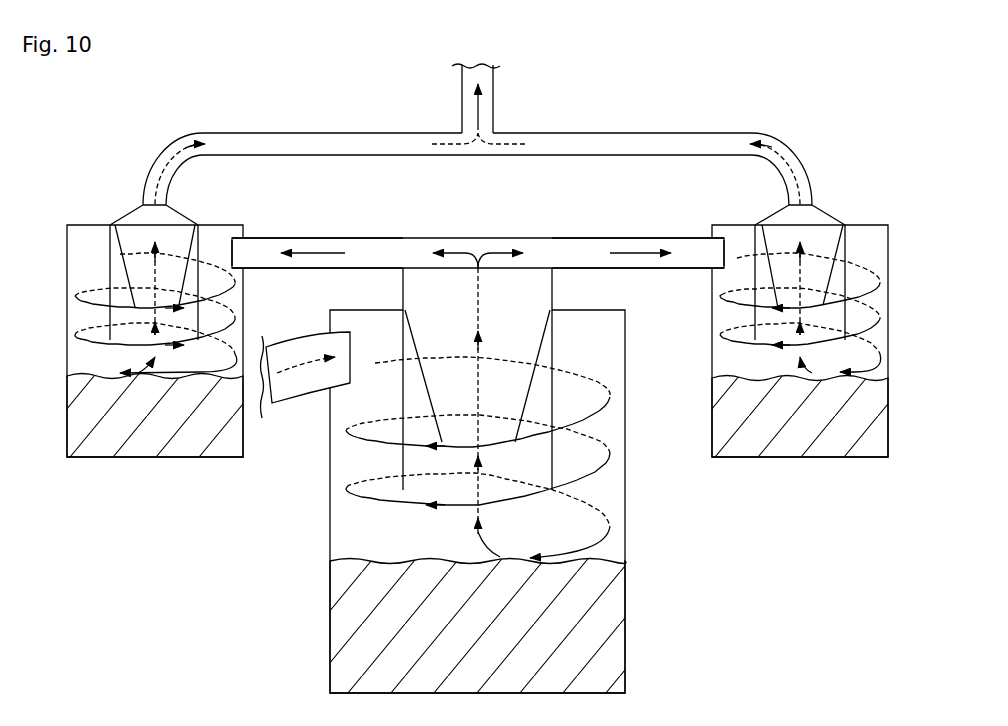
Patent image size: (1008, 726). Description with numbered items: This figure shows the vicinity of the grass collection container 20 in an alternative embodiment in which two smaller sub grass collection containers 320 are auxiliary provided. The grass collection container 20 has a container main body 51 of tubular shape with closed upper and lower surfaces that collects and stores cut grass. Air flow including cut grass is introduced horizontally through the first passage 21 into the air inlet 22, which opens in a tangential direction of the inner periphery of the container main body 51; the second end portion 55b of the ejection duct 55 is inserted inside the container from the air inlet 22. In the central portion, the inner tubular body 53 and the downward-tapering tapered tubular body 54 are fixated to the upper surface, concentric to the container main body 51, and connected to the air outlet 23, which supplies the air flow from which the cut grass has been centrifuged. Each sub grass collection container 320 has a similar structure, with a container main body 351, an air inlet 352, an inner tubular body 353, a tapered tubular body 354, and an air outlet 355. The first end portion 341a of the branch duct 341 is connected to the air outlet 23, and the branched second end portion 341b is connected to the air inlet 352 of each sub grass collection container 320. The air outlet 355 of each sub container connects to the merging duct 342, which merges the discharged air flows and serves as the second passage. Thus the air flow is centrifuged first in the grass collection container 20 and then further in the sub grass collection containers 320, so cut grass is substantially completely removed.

The merging duct 342 is at (613, 130).
The air outlet 355 is at (146, 203).
The tapered tubular body 354 is at (182, 226).
The inner tubular body 353 is at (103, 246).
The branch duct 341 is at (478, 364).
The first end portion 341a is at (402, 290).
The branched second end portion 341b is at (243, 250).
The air inlet 352 is at (250, 247).
The air outlet 23 is at (525, 310).
The tapered tubular body 54 is at (545, 356).
The inner tubular body 53 is at (600, 414).
The container main body 51 is at (628, 526).
The grass collection container 20 is at (630, 597).
The sub grass collection container 320 is at (152, 458).
The container main body 351 is at (90, 458).
The ejection duct 55 is at (302, 389).
The second end portion 55b is at (302, 389).
The air inlet 22 is at (320, 372).
The first passage 21 is at (275, 407).